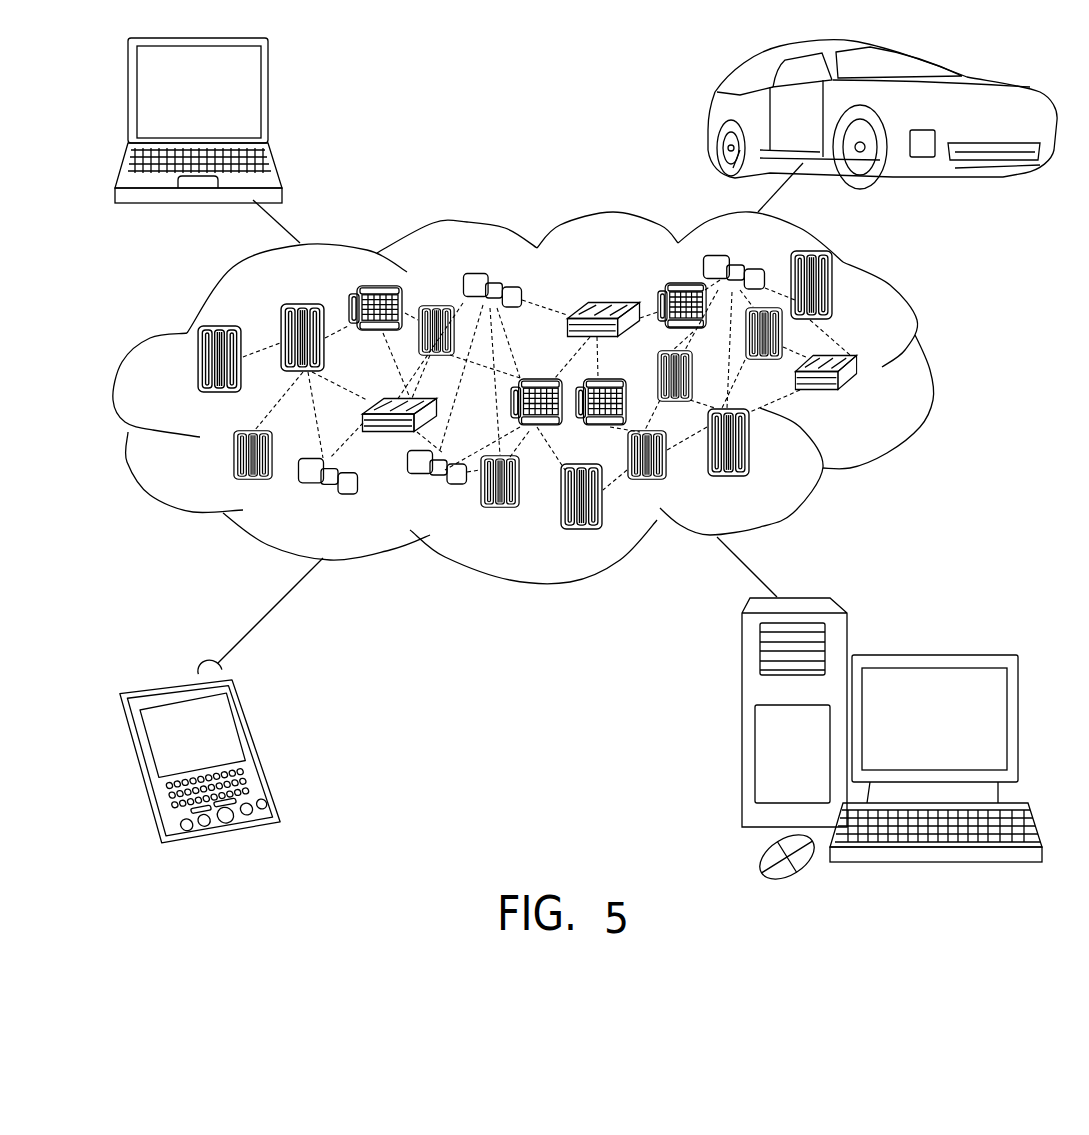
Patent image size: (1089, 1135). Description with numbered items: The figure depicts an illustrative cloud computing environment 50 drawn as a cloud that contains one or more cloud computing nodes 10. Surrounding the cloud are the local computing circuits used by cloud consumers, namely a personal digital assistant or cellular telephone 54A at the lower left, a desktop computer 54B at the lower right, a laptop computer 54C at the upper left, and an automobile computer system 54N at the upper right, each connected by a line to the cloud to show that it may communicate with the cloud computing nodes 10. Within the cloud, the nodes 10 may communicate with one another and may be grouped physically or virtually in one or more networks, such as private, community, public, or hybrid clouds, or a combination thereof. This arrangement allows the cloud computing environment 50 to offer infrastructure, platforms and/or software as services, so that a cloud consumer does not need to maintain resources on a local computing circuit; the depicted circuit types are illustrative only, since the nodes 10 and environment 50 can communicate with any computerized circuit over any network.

The cloud computing environment 50 is at (935, 368).
The cloud computing nodes 10 is at (878, 402).
The personal digital assistant or cellular telephone 54A is at (257, 748).
The desktop computer 54B is at (930, 655).
The laptop computer 54C is at (268, 100).
The automobile computer system 54N is at (712, 112).